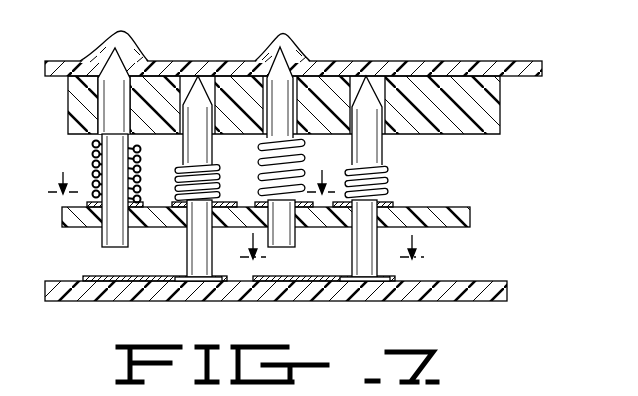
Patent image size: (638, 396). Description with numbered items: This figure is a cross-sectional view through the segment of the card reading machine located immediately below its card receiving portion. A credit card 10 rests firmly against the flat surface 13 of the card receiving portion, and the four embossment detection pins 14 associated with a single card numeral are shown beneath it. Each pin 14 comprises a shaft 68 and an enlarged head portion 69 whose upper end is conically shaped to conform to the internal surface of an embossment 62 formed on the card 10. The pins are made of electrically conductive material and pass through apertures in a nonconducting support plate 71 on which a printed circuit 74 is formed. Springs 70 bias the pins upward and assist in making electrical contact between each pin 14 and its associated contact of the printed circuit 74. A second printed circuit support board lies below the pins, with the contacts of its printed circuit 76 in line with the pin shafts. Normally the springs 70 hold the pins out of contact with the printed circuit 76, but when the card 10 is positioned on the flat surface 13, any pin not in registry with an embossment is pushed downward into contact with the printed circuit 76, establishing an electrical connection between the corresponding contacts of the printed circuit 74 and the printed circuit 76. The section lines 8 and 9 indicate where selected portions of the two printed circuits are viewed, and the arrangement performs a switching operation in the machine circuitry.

The section line 8- 8 is at (191, 165).
The section line 9- 9 is at (333, 253).
The credit card 10 is at (463, 62).
The flat surface 13 is at (157, 72).
The embossment detection pin 14 is at (213, 146).
The embossment 62 is at (113, 37).
The shaft 68 is at (358, 242).
The enlarged head portion 69 is at (303, 93).
The spring 70 is at (177, 185).
The nonconducting support plate 71 is at (465, 212).
The printed circuit 74 is at (393, 208).
The printed circuit 76 is at (83, 277).